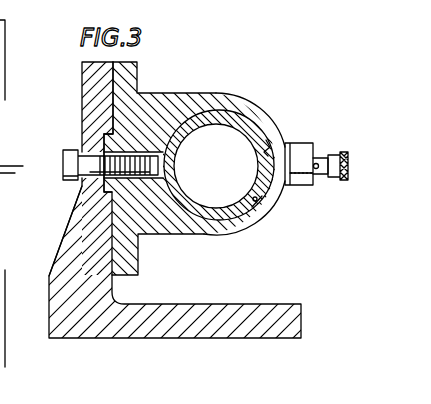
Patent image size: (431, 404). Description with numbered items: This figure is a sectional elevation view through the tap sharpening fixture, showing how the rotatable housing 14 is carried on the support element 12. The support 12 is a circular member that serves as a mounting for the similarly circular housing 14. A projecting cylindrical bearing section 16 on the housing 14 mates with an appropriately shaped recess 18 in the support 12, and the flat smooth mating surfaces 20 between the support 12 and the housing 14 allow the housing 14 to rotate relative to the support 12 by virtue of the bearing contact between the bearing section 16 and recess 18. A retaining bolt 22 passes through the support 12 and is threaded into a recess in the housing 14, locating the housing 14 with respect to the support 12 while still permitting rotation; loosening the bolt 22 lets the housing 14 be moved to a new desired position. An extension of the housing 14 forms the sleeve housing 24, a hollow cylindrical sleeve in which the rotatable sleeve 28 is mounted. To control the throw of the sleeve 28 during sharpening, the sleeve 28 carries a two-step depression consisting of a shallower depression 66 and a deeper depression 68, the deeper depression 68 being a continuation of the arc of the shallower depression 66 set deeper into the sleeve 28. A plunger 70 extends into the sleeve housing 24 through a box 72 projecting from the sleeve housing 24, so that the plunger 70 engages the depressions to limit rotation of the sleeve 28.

The support element 12 is at (82, 77).
The rotatable housing 14 is at (135, 77).
The mating surfaces 20 is at (115, 61).
The bearing section 16 is at (103, 143).
The recess 18 is at (82, 193).
The retaining bolt 22 is at (63, 155).
The sleeve housing 24 is at (238, 98).
The rotatable sleeve 28 is at (251, 128).
The deeper depression 68 is at (287, 140).
The plunger 70 is at (324, 185).
The box 72 is at (293, 187).
The shallower depression 66 is at (256, 208).